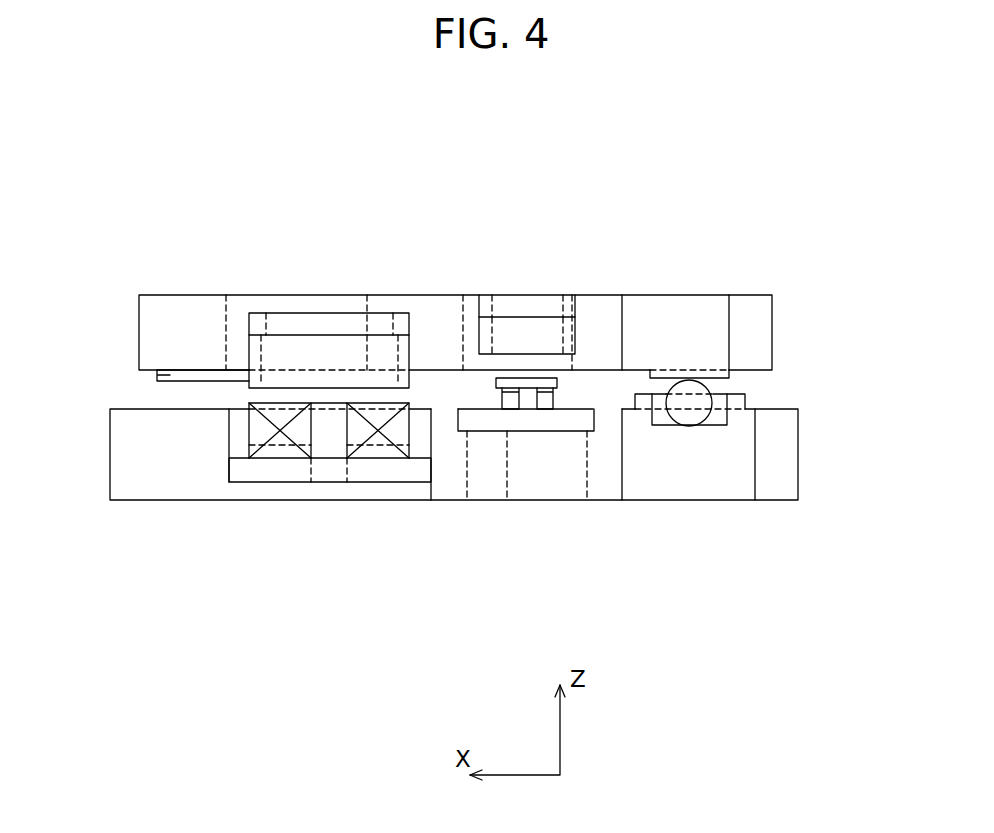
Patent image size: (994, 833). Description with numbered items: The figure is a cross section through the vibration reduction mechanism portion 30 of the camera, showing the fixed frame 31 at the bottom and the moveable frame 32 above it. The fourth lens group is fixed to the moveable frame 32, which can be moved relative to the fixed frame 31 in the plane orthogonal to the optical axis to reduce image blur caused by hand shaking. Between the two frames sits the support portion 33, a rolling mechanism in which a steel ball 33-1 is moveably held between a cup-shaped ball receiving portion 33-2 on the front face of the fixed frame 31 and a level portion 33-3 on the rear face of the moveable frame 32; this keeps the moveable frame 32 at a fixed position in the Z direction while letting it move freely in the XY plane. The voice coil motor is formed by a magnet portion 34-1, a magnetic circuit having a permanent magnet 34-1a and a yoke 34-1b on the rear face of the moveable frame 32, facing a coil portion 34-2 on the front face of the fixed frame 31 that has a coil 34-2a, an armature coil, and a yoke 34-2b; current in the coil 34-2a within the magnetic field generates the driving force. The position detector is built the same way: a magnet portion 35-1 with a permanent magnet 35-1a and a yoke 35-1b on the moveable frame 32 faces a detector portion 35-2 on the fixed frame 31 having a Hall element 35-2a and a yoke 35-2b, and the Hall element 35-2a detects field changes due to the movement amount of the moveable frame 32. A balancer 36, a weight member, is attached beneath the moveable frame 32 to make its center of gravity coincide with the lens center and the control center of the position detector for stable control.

The vibration reduction mechanism portion 30 is at (793, 324).
The fixed frame 31 is at (120, 465).
The moveable frame 32 is at (745, 306).
The support portion 33 is at (887, 580).
The steel ball 33-1 is at (690, 415).
The ball receiving portion 33-2 is at (718, 418).
The level portion 33-3 is at (730, 377).
The magnet portion 34-1 is at (398, 232).
The permanent magnet 34-1a is at (283, 355).
The yoke 34-1b is at (333, 327).
The coil portion 34-2 is at (387, 580).
The coil 34-2a is at (287, 453).
The yoke 34-2b is at (264, 473).
The magnet portion 35-1 is at (630, 232).
The permanent magnet 35-1a is at (503, 330).
The yoke 35-1b is at (543, 305).
The detector portion 35-2 is at (602, 580).
The Hall element 35-2a is at (527, 387).
The yoke 35-2b is at (487, 425).
The balancer 36 is at (157, 377).